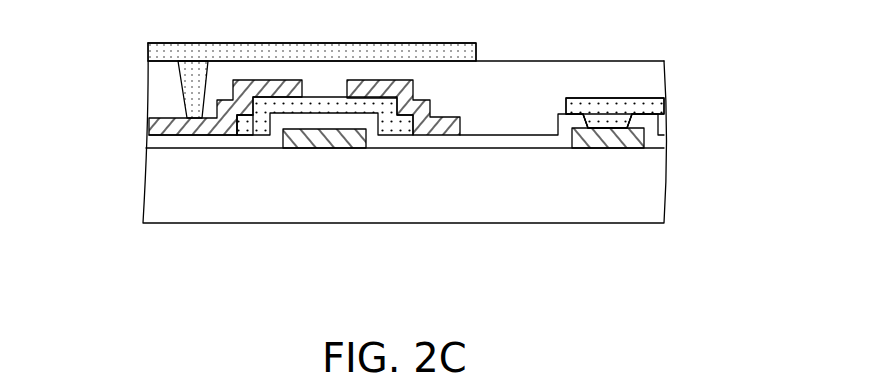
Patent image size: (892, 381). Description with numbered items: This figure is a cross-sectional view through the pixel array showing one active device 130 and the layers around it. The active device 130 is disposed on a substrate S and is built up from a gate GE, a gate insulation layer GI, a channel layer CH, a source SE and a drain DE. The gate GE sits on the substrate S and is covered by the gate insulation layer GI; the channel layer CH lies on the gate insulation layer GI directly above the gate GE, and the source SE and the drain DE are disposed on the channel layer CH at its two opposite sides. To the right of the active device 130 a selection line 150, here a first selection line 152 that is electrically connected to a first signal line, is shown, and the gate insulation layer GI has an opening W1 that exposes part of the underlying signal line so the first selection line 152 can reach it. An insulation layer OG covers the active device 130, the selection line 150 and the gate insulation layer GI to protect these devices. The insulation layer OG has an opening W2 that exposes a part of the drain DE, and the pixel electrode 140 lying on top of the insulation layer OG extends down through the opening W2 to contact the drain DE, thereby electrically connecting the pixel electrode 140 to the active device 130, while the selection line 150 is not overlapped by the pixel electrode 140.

The substrate S is at (160, 176).
The insulation layer OG is at (650, 74).
The pixel electrode 140 is at (152, 55).
The opening W2 is at (185, 81).
The opening W1 is at (589, 123).
The drain DE is at (193, 127).
The source SE is at (423, 128).
The gate GE is at (297, 139).
The gate insulation layer GI is at (373, 139).
The channel layer CH is at (252, 128).
The first selection line 152 is at (658, 104).
The selection line 150 is at (650, 125).
The active device 130 is at (447, 275).